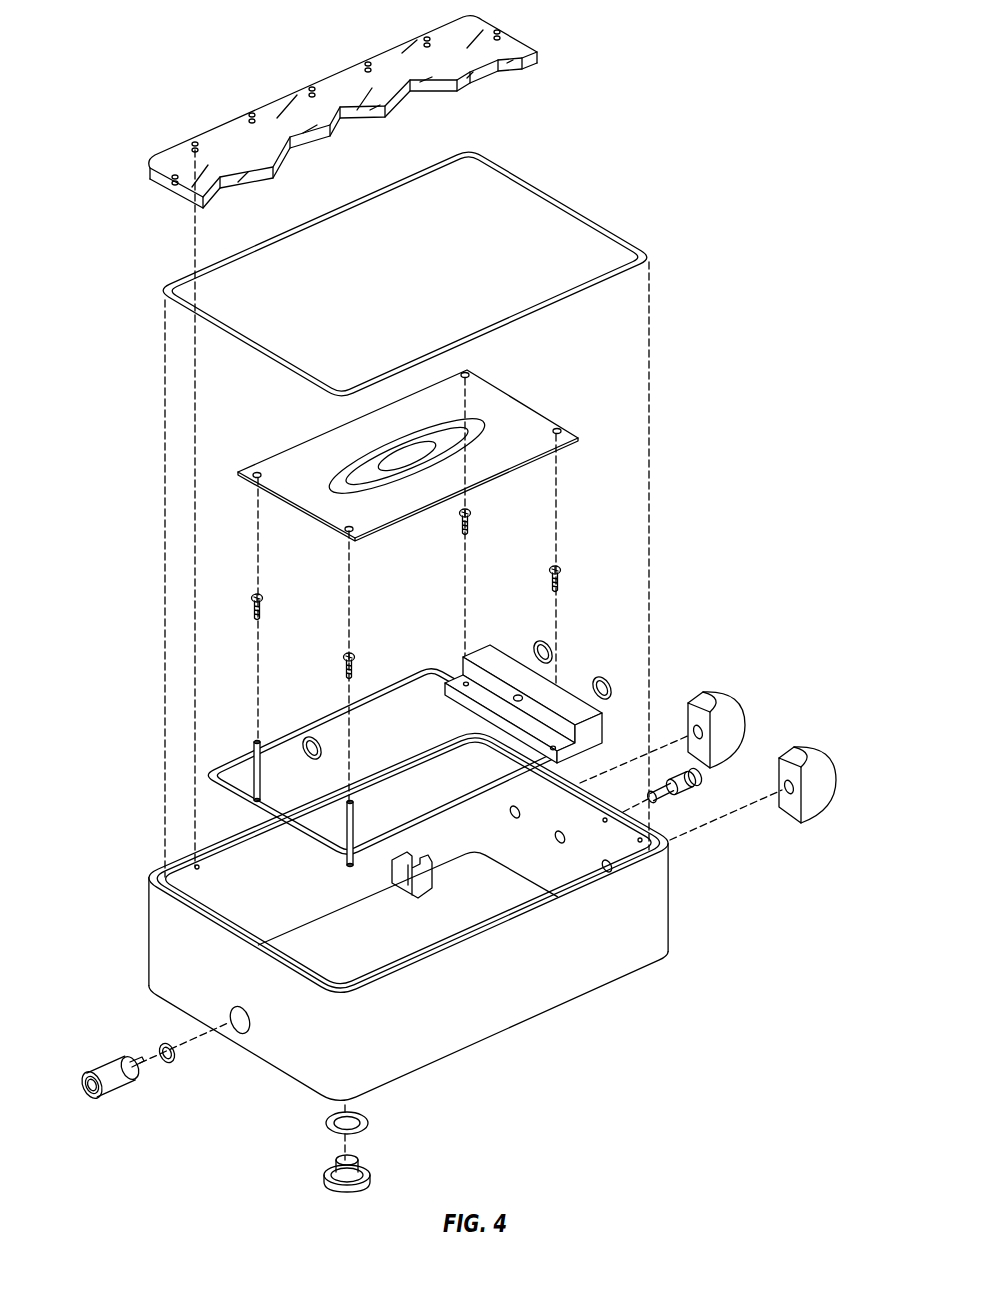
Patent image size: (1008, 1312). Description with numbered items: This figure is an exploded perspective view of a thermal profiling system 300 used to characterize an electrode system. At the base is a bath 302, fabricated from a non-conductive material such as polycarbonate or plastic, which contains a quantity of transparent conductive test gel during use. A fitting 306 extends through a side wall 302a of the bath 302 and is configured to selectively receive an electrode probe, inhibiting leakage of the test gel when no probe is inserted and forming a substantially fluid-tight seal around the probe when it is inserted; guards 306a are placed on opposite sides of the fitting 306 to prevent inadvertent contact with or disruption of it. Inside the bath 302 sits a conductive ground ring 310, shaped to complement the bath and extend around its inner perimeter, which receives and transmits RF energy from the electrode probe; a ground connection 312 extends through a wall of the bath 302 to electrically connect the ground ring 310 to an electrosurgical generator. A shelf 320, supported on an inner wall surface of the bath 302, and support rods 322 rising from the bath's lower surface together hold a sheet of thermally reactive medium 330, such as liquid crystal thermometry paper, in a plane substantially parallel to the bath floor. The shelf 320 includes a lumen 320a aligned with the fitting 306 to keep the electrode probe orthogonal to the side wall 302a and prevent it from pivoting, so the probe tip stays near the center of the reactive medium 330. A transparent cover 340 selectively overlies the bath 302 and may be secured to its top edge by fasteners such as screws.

The thermal profiling system 300 is at (670, 94).
The cover 340 is at (237, 130).
The thermally reactive medium 330 is at (302, 513).
The shelf 320 is at (550, 698).
The lumen 320a is at (514, 700).
The support rod 322 is at (250, 760).
The ground ring 310 is at (253, 807).
The bath 302 is at (674, 897).
The side wall 302a is at (556, 874).
The fitting 306 is at (698, 786).
The guards 306a is at (712, 700).
The ground connection 312 is at (118, 1070).